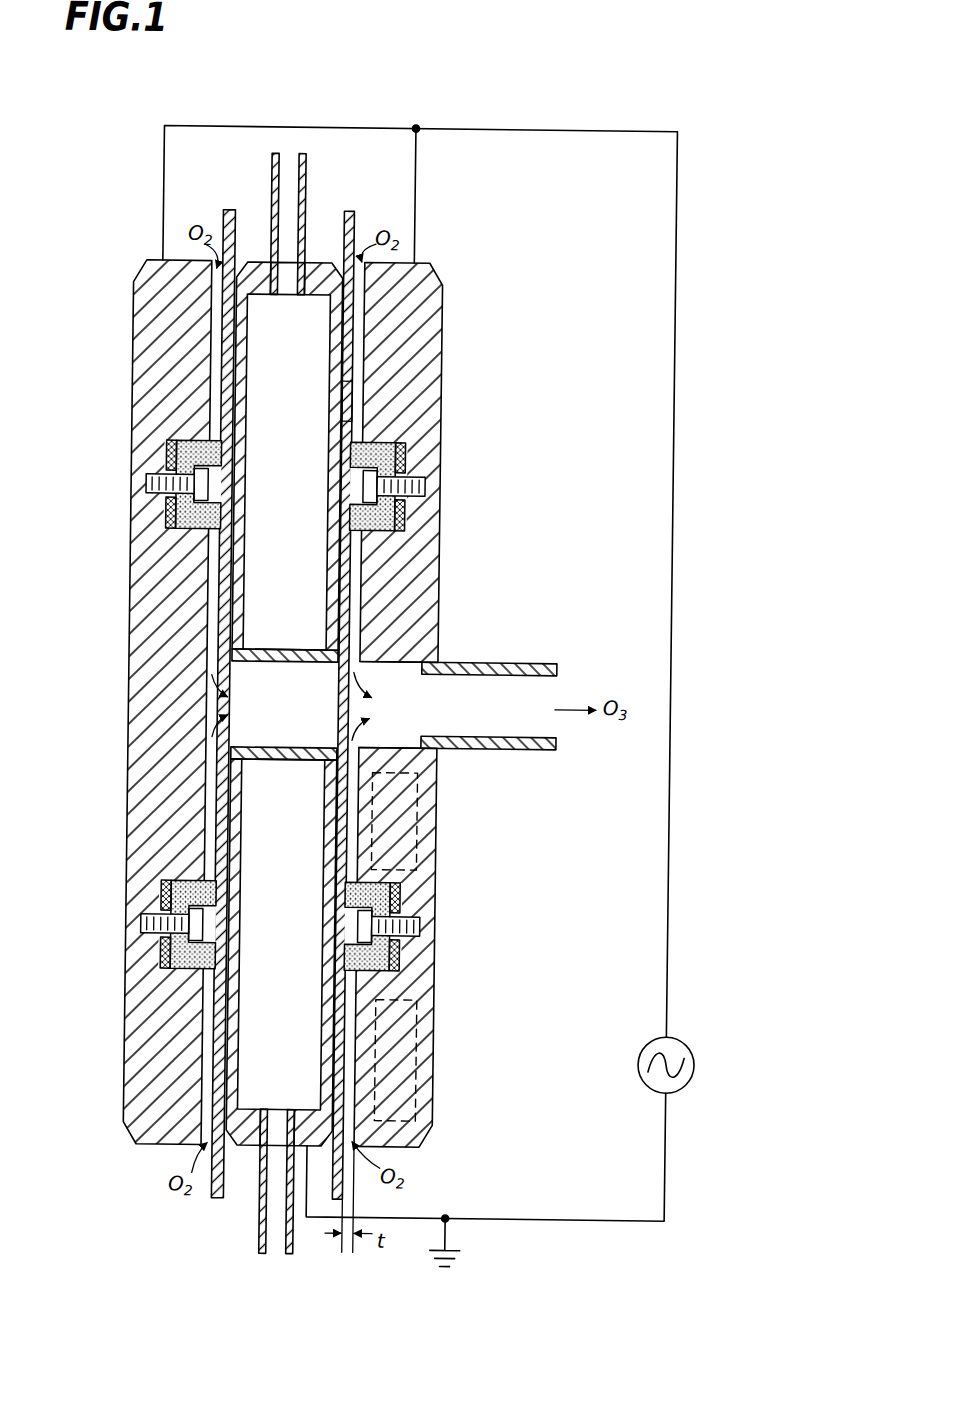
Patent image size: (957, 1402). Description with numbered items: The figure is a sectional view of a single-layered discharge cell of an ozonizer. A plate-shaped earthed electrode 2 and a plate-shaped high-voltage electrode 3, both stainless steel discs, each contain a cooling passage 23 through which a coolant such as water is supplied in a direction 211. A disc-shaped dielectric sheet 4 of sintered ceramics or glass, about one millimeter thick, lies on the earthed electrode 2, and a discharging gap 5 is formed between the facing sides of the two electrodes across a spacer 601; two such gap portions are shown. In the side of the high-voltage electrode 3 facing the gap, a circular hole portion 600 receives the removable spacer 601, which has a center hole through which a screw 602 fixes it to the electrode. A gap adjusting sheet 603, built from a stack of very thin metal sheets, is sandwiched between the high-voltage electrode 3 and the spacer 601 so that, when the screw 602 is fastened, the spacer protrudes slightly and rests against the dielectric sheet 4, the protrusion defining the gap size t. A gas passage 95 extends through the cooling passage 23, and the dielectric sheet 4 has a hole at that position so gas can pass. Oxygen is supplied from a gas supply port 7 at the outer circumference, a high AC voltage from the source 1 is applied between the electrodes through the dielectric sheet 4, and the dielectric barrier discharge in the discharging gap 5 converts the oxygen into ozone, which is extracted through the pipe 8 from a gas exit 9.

The AC power source 1 is at (702, 1034).
The earthed electrode 2 is at (358, 348).
The high-voltage electrode 3 is at (139, 352).
The dielectric sheet 4 is at (355, 390).
The discharging gap 5 is at (217, 310).
The gas supply port 7 is at (219, 1148).
The ozone outlet pipe 8 is at (566, 725).
The gas exit 9 is at (479, 746).
The cooling passage 23 is at (268, 1019).
The gas passage 95 is at (256, 725).
The direction 211 is at (291, 163).
The hole portion 600 is at (281, 696).
The spacer 601 is at (190, 446).
The screw 602 is at (158, 484).
The gap adjusting sheet 603 is at (178, 516).